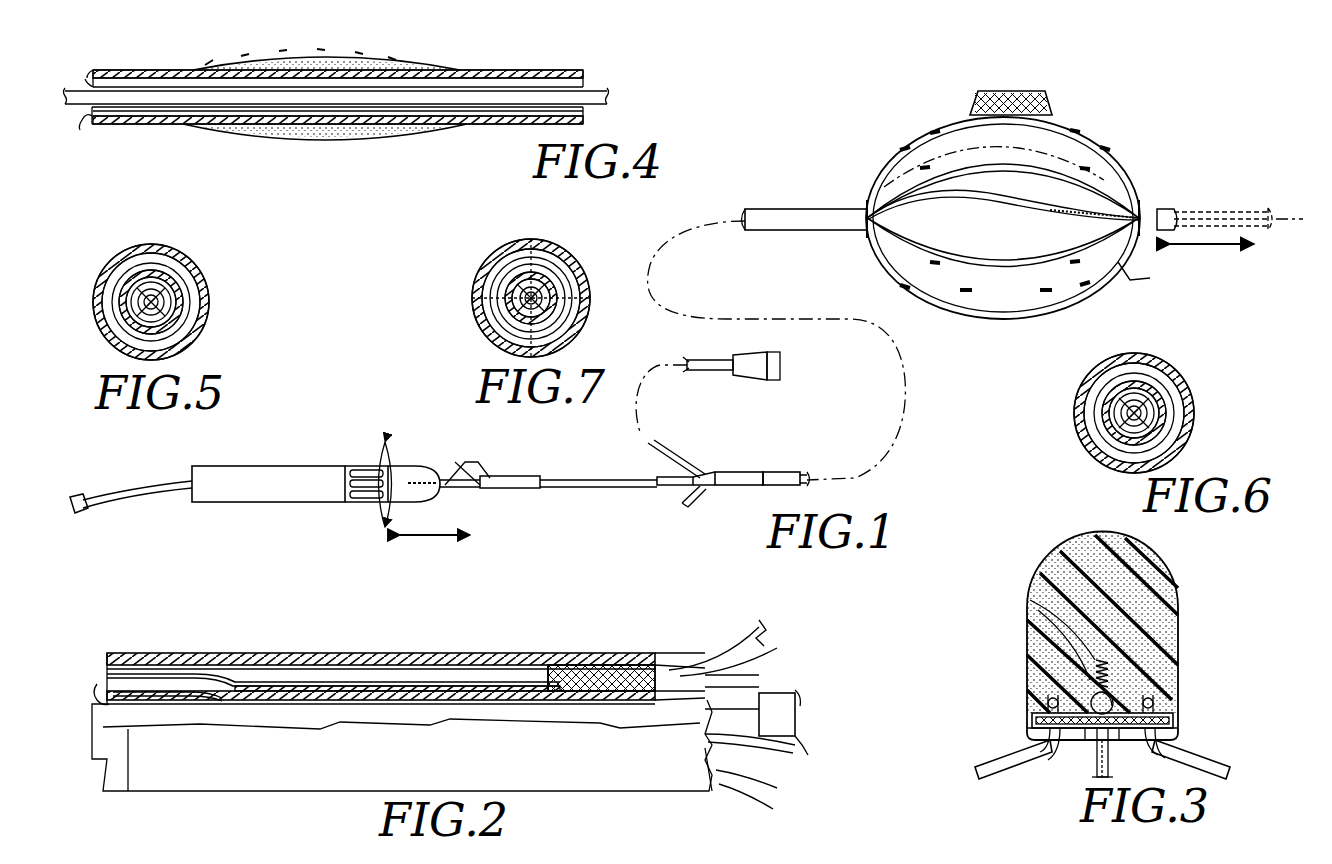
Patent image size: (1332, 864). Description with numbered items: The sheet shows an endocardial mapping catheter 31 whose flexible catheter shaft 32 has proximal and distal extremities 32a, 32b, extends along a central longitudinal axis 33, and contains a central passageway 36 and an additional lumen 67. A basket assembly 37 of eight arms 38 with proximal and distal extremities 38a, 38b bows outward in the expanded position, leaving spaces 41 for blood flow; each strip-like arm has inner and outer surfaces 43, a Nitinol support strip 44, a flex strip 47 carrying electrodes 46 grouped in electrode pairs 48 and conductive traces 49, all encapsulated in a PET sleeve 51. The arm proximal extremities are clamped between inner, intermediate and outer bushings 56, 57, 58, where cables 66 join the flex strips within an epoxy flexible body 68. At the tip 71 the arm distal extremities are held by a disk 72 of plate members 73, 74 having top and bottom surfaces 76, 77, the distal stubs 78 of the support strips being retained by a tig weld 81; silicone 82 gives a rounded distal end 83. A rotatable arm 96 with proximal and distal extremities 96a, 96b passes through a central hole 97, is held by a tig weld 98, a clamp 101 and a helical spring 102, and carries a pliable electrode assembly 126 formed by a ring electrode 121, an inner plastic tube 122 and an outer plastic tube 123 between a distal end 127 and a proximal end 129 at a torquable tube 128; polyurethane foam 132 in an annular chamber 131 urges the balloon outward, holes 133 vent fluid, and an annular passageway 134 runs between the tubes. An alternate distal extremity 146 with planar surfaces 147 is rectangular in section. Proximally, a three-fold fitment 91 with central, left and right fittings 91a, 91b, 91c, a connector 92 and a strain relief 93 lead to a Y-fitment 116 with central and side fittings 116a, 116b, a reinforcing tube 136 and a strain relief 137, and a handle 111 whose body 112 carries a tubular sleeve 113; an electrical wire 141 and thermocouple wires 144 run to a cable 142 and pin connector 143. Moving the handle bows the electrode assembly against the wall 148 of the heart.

In FIG. 1, the endocardial mapping catheter 31 is at (1170, 98).
In FIG. 1, the catheter shaft 32 is at (748, 208).
In FIG. 1, the proximal extremity of catheter shaft 32a is at (798, 472).
In FIG. 2, the distal extremity of catheter shaft 32b is at (110, 795).
In FIG. 1, the distal extremity of catheter shaft 32b is at (760, 228).
In FIG. 1, the central longitudinal axis 33 is at (1296, 235).
In FIG. 2, the central passageway 36 is at (103, 704).
In FIG. 1, the basket assembly 37 is at (1110, 118).
In FIG. 1, the arms 38 is at (1125, 285).
In FIG. 2, the proximal extremities of arms 38a is at (716, 794).
In FIG. 1, the proximal extremities of arms 38a is at (850, 278).
In FIG. 3, the distal extremities of arms 38b is at (985, 778).
In FIG. 1, the distal extremities of arms 38b is at (1142, 238).
In FIG. 1, the spaces 41 is at (1142, 175).
In FIG. 2, the inner and outer surfaces 43 is at (758, 630).
In FIG. 1, the inner and outer surfaces 43 is at (940, 125).
In FIG. 2, the support strip 44 is at (675, 667).
In FIG. 1, the electrodes 46 is at (1062, 165).
In FIG. 2, the flex strip 47 is at (440, 663).
In FIG. 1, the electrode pairs 48 is at (1062, 278).
In FIG. 1, the conductive traces 49 is at (910, 300).
In FIG. 2, the encapsulating PET sleeve 51 is at (615, 666).
In FIG. 2, the inner bushing 56 is at (142, 700).
In FIG. 2, the intermediate bushing 57 is at (546, 690).
In FIG. 2, the outer bushing 58 is at (562, 667).
In FIG. 2, the cables 66 is at (190, 673).
In FIG. 1, the cables 66 is at (700, 360).
In FIG. 2, the additional lumen 67 is at (135, 666).
In FIG. 2, the flexible body 68 is at (252, 668).
In FIG. 3, the tip 71 is at (1185, 582).
In FIG. 1, the tip 71 is at (1165, 205).
In FIG. 3, the disk 72 is at (1160, 705).
In FIG. 3, the first plate member 73 is at (1175, 722).
In FIG. 3, the second plate member 74 is at (1176, 732).
In FIG. 3, the top surface 76 is at (1046, 708).
In FIG. 3, the bottom surface 77 is at (1086, 740).
In FIG. 3, the distal stubs 78 is at (1045, 748).
In FIG. 3, the tig weld 81 is at (1050, 698).
In FIG. 3, the silicone 82 is at (1172, 622).
In FIG. 3, the rounded distal end 83 is at (1050, 555).
In FIG. 1, the three-fold fitment 91 is at (738, 472).
In FIG. 1, the central fitting 91a is at (672, 486).
In FIG. 1, the left fitting 91b is at (672, 458).
In FIG. 1, the right fitting 91c is at (690, 503).
In FIG. 1, the connector 92 is at (757, 355).
In FIG. 1, the strain relief 93 is at (782, 472).
In FIG. 4, the rotatable arm 96 is at (605, 92).
In FIG. 5, the rotatable arm 96 is at (158, 295).
In FIG. 6, the rotatable arm 96 is at (1126, 409).
In FIG. 1, the rotatable arm 96 is at (1092, 170).
In FIG. 1, the proximal extremity of rotatable arm 96a is at (410, 485).
In FIG. 3, the distal extremity of rotatable arm 96b is at (1095, 775).
In FIG. 3, the central hole 97 is at (1112, 700).
In FIG. 3, the tig weld 98 is at (1030, 618).
In FIG. 3, the clamp 101 is at (1095, 770).
In FIG. 3, the helical spring 102 is at (1060, 598).
In FIG. 1, the handle 111 is at (250, 466).
In FIG. 1, the body 112 is at (265, 502).
In FIG. 1, the tubular sleeve 113 is at (345, 503).
In FIG. 1, the Y-fitment 116 is at (480, 476).
In FIG. 1, the central fitting 116a is at (413, 472).
In FIG. 1, the side fitting 116b is at (458, 462).
In FIG. 4, the ring electrode 121 is at (300, 132).
In FIG. 5, the ring electrode 121 is at (173, 318).
In FIG. 7, the ring electrode 121 is at (511, 308).
In FIG. 4, the inner plastic tube 122 is at (440, 68).
In FIG. 5, the inner plastic tube 122 is at (113, 342).
In FIG. 7, the inner plastic tube 122 is at (500, 262).
In FIG. 6, the inner plastic tube 122 is at (1180, 385).
In FIG. 4, the outer plastic tube 123 is at (440, 116).
In FIG. 5, the outer plastic tube 123 is at (186, 300).
In FIG. 7, the outer plastic tube 123 is at (505, 297).
In FIG. 2, the outer plastic tube 123 is at (805, 742).
In FIG. 4, the pliable electrode assembly 126 is at (458, 54).
In FIG. 1, the pliable electrode assembly 126 is at (915, 160).
In FIG. 4, the distal end of electrode assembly 127 is at (570, 70).
In FIG. 1, the distal end of electrode assembly 127 is at (1010, 205).
In FIG. 6, the torquable tube 128 is at (1096, 414).
In FIG. 2, the torquable tube 128 is at (754, 722).
In FIG. 4, the proximal end of electrode assembly 129 is at (118, 69).
In FIG. 2, the proximal end of electrode assembly 129 is at (800, 692).
In FIG. 4, the annular chamber 131 is at (230, 118).
In FIG. 4, the polyurethane foam 132 is at (330, 140).
In FIG. 5, the polyurethane foam 132 is at (113, 288).
In FIG. 7, the polyurethane foam 132 is at (497, 286).
In FIG. 4, the holes 133 is at (410, 47).
In FIG. 5, the holes 133 is at (154, 253).
In FIG. 7, the holes 133 is at (524, 250).
In FIG. 6, the annular passageway 134 is at (1111, 451).
In FIG. 6, the reinforcing tube 136 is at (1170, 367).
In FIG. 1, the reinforcing tube 136 is at (568, 478).
In FIG. 1, the strain relief 137 is at (490, 490).
In FIG. 4, the electrical wire 141 is at (92, 124).
In FIG. 1, the cable 142 is at (160, 490).
In FIG. 1, the pin connector 143 is at (75, 495).
In FIG. 4, the thermocouple wires 144 is at (140, 76).
In FIG. 7, the distal extremity 146 is at (560, 276).
In FIG. 7, the planar surfaces 147 is at (536, 286).
In FIG. 1, the wall of the heart 148 is at (1015, 90).